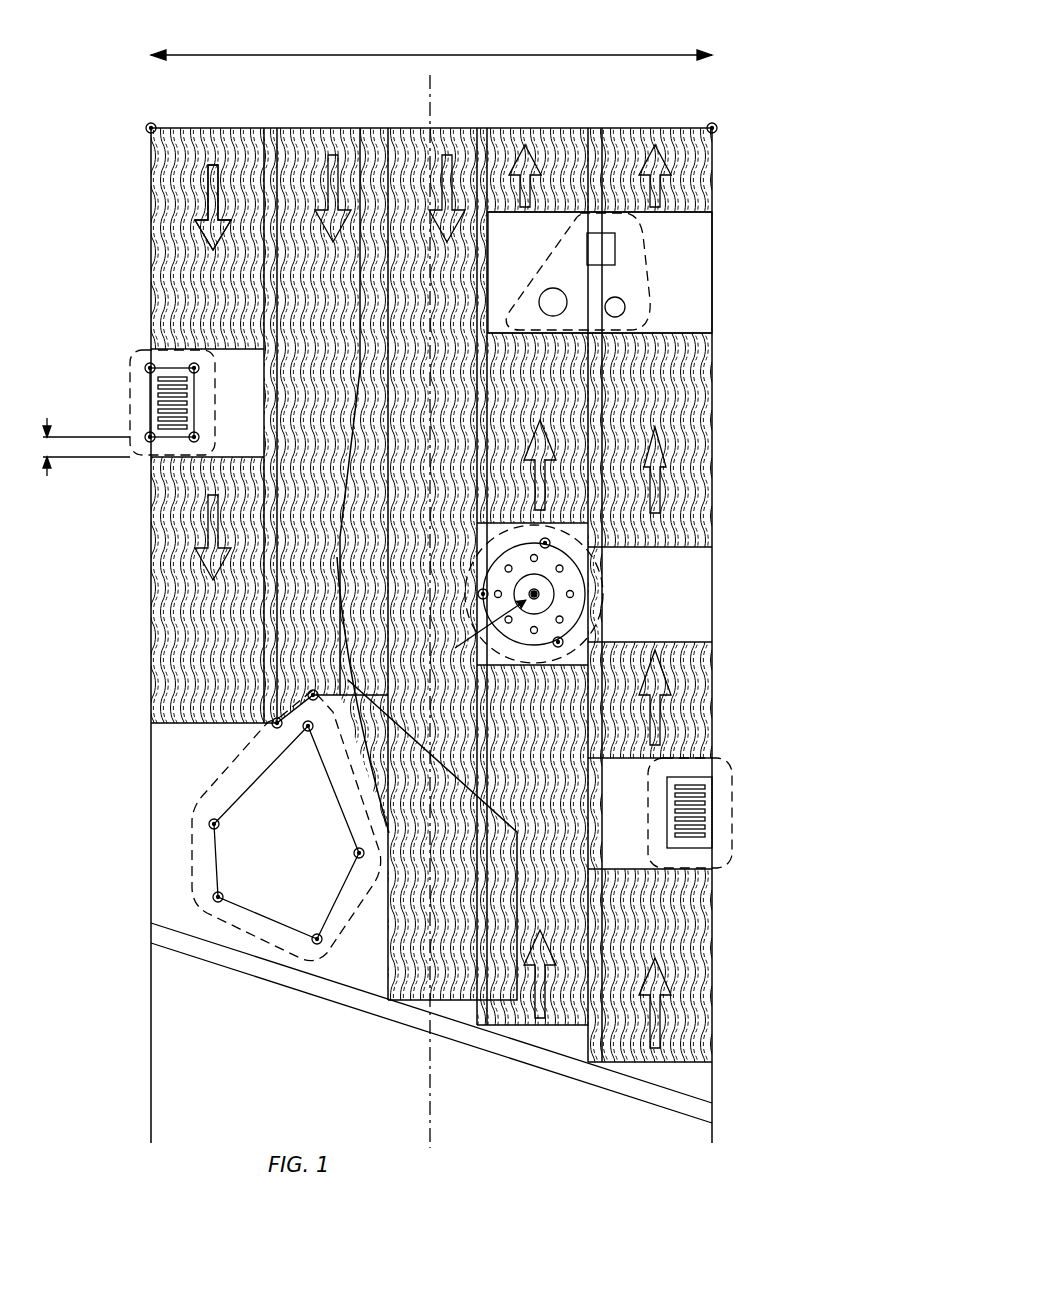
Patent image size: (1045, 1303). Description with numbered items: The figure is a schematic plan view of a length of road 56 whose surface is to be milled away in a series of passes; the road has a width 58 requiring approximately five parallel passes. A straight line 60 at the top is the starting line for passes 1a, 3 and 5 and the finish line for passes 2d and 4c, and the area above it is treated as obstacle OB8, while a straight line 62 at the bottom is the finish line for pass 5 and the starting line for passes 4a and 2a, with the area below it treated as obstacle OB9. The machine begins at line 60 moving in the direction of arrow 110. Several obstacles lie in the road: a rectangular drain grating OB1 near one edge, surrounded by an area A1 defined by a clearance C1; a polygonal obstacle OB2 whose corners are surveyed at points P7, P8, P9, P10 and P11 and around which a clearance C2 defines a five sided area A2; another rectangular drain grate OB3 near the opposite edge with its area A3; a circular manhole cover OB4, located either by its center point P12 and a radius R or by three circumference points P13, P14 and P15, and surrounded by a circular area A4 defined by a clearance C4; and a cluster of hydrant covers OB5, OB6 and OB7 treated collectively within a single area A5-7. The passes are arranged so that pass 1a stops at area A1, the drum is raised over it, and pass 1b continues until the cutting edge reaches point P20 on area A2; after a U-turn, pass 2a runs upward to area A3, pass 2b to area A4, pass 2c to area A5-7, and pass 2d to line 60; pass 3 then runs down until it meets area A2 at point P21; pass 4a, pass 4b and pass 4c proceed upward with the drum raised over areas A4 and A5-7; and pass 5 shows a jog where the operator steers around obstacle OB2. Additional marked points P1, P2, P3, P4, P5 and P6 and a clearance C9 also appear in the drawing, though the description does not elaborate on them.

The road 56 is at (667, 128).
The width 58 is at (218, 55).
The straight line 60 is at (245, 128).
The straight line 62 is at (240, 970).
The arrow 110 is at (210, 195).
The milling pass 1a is at (200, 201).
The milling pass 1b is at (200, 533).
The milling pass 3 is at (325, 194).
The milling pass 5 is at (438, 194).
The milling pass 4a is at (551, 974).
The milling pass 4b is at (552, 465).
The milling pass 4c is at (536, 176).
The milling pass 2a is at (666, 1003).
The milling pass 2b is at (666, 700).
The milling pass 2c is at (669, 476).
The milling pass 2d is at (667, 176).
The corner point P1 is at (148, 133).
The corner point P2 is at (716, 133).
The point P3 is at (200, 368).
The point P4 is at (200, 437).
The point P5 is at (145, 433).
The point P6 is at (145, 365).
The corner point P7 is at (314, 724).
The corner point P8 is at (362, 858).
The corner point P9 is at (316, 946).
The corner point P10 is at (213, 894).
The corner point P11 is at (209, 822).
The center point P12 is at (540, 594).
The circumference point P13 is at (550, 545).
The circumference point P14 is at (563, 642).
The circumference point P15 is at (478, 597).
The intersection point P20 is at (272, 724).
The intersection point P21 is at (308, 695).
The area A1 is at (140, 355).
The five sided area A2 is at (232, 762).
The area A3 is at (722, 765).
The circular area A4 is at (493, 555).
The area A5-7 is at (648, 318).
The obstacle OB1 is at (158, 397).
The obstacle OB2 is at (286, 832).
The obstacle OB3 is at (705, 830).
The obstacle OB4 is at (570, 610).
The obstacle OB5 is at (625, 307).
The obstacle OB6 is at (565, 295).
The obstacle OB7 is at (615, 250).
The obstacle OB8 is at (540, 120).
The obstacle OB9 is at (405, 1040).
The clearance C1 is at (50, 474).
The clearance C2 is at (273, 928).
The clearance C4 is at (590, 570).
The clearance C9 is at (510, 1043).
The radius R is at (477, 633).